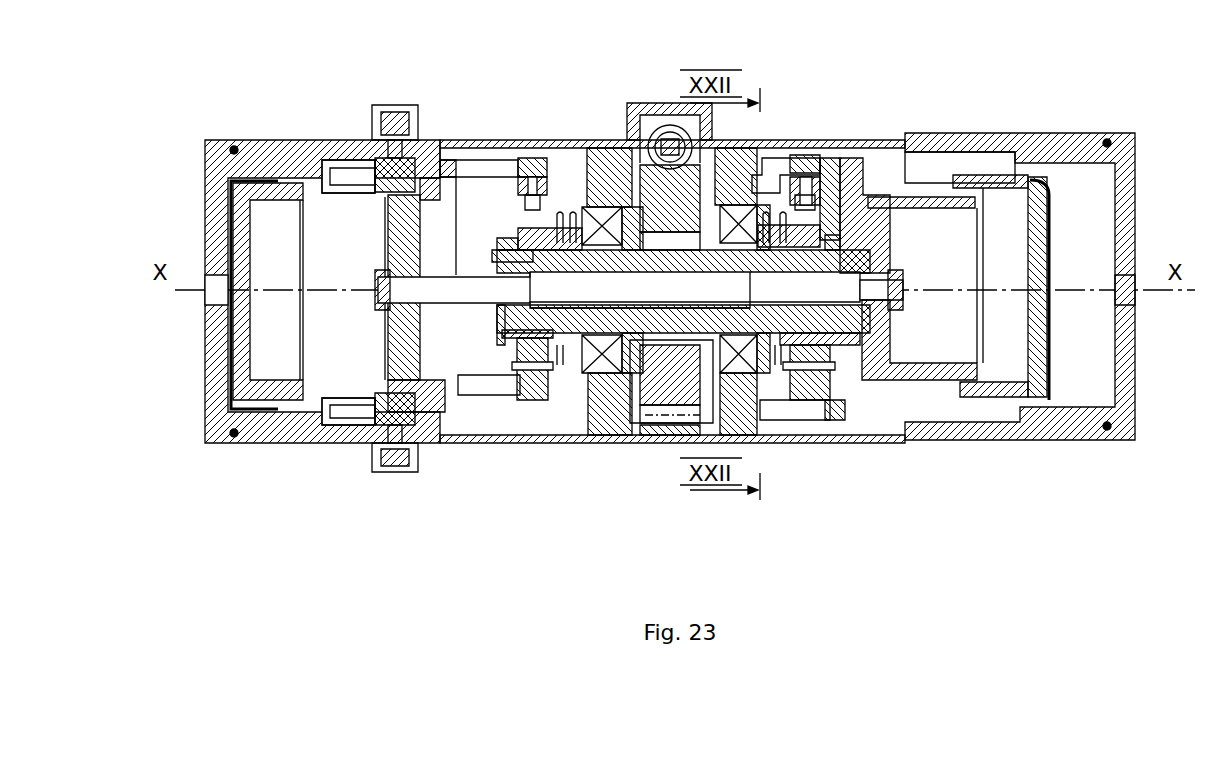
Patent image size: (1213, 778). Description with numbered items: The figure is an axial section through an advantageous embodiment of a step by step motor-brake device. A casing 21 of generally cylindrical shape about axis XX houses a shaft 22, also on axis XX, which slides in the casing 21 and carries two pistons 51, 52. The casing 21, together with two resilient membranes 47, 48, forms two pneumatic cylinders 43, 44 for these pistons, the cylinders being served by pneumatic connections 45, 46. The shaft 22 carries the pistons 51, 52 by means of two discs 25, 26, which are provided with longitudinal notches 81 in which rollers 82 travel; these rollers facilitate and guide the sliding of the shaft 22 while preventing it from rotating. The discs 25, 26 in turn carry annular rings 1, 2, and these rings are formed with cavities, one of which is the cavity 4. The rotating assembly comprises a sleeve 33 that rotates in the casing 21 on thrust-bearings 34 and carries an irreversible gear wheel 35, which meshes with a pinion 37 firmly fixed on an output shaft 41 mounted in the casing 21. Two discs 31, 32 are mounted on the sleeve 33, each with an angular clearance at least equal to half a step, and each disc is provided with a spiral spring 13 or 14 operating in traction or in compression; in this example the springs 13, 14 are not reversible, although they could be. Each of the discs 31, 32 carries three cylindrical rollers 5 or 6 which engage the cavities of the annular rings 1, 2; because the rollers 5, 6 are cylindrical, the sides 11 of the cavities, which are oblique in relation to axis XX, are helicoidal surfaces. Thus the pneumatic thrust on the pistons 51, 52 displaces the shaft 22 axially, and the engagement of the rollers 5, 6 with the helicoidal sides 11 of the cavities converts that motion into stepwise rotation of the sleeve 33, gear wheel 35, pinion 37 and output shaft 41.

The annular ring 1 is at (788, 215).
The annular ring 2 is at (440, 150).
The cavity 4 is at (482, 165).
The roller 5 is at (808, 170).
The roller 6 is at (533, 170).
The side 11 is at (778, 167).
The spiral spring 13 is at (870, 192).
The spiral spring 14 is at (575, 215).
The casing 21 is at (963, 155).
The shaft 22 is at (643, 287).
The disc 25 is at (875, 330).
The disc 26 is at (432, 347).
The disc 31 is at (817, 367).
The disc 32 is at (527, 340).
The sleeve 33 is at (562, 245).
The thrust-bearing 34 is at (603, 367).
The irreversible gear wheel 35 is at (655, 190).
The pinion 37 is at (657, 130).
The output shaft 41 is at (678, 140).
The pneumatic cylinder 43 is at (1070, 265).
The pneumatic cylinder 44 is at (213, 260).
The pneumatic connection 45 is at (1130, 291).
The pneumatic connection 46 is at (210, 297).
The resilient membrane 47 is at (1047, 210).
The resilient membrane 48 is at (222, 215).
The piston 51 is at (1040, 360).
The piston 52 is at (242, 357).
The longitudinal notch 81 is at (332, 170).
The roller 82 is at (380, 170).